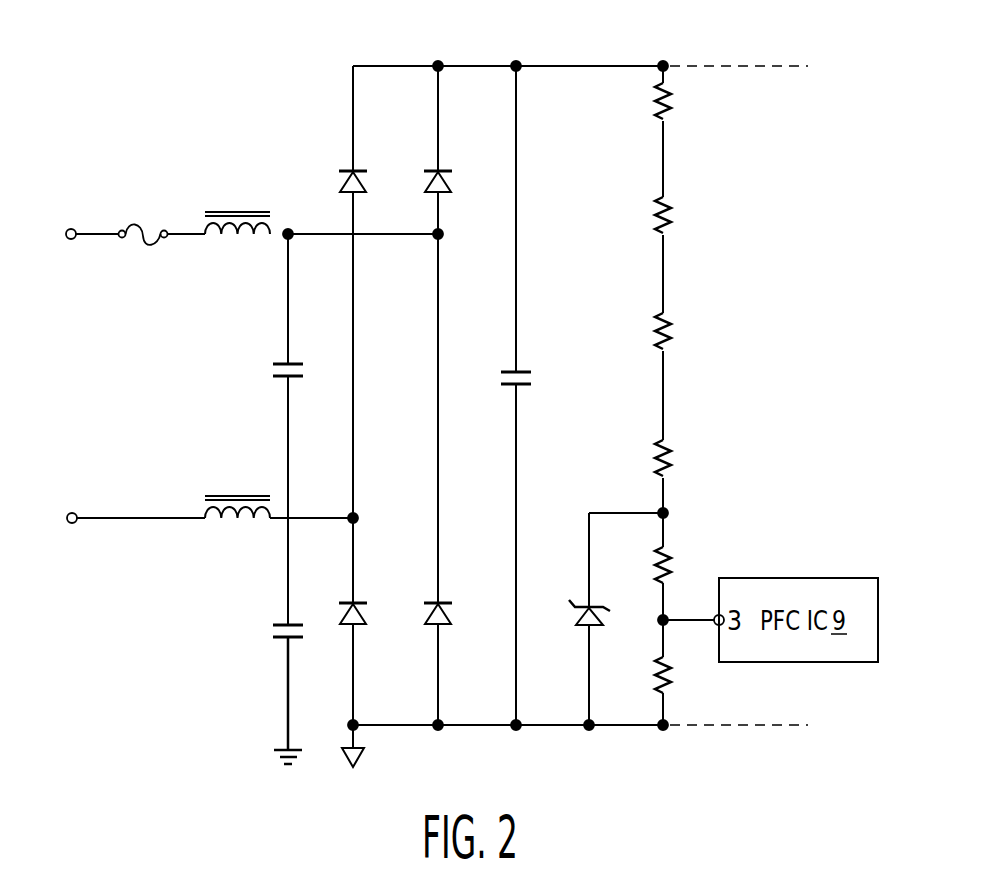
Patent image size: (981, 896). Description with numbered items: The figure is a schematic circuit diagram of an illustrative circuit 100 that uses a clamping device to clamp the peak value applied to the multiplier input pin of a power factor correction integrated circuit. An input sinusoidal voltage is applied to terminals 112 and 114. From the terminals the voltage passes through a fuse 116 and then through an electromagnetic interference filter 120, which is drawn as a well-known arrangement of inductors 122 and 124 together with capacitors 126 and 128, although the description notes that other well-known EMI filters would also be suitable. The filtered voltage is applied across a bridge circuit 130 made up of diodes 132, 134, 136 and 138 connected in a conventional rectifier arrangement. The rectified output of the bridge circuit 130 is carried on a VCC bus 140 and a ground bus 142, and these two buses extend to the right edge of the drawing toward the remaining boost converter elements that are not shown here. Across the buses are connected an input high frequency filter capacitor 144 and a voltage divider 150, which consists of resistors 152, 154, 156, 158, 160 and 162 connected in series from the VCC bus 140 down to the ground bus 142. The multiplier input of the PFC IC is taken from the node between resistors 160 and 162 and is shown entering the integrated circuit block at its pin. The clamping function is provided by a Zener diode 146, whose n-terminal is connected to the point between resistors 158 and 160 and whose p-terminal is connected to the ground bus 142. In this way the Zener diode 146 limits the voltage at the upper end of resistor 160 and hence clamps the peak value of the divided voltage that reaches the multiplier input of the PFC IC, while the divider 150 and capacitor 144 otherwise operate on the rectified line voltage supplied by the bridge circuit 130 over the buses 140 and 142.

The circuit 100 is at (201, 75).
The terminal 112 is at (71, 229).
The terminal 114 is at (72, 524).
The fuse 116 is at (122, 229).
The EMI filter 120 is at (219, 206).
The inductor 122 is at (247, 211).
The inductor 124 is at (240, 497).
The capacitor 126 is at (285, 358).
The capacitor 128 is at (272, 631).
The bridge circuit 130 is at (344, 118).
The diode 132 is at (367, 185).
The diode 134 is at (367, 617).
The diode 136 is at (453, 185).
The diode 138 is at (453, 617).
The VCC bus 140 is at (465, 64).
The ground bus 142 is at (470, 728).
The input high frequency filter capacitor 144 is at (525, 368).
The Zener diode 146 is at (575, 612).
The voltage divider 150 is at (632, 162).
The resistor 152 is at (672, 100).
The resistor 154 is at (672, 215).
The resistor 156 is at (672, 330).
The resistor 158 is at (672, 456).
The resistor 160 is at (670, 565).
The resistor 162 is at (672, 686).